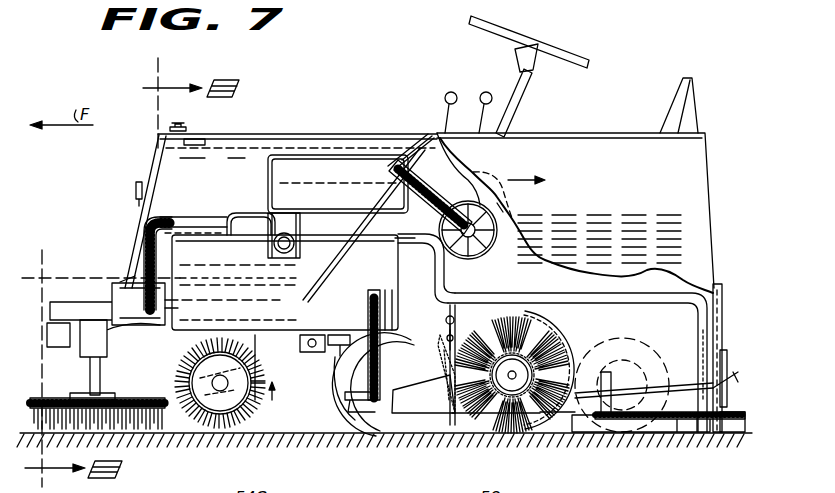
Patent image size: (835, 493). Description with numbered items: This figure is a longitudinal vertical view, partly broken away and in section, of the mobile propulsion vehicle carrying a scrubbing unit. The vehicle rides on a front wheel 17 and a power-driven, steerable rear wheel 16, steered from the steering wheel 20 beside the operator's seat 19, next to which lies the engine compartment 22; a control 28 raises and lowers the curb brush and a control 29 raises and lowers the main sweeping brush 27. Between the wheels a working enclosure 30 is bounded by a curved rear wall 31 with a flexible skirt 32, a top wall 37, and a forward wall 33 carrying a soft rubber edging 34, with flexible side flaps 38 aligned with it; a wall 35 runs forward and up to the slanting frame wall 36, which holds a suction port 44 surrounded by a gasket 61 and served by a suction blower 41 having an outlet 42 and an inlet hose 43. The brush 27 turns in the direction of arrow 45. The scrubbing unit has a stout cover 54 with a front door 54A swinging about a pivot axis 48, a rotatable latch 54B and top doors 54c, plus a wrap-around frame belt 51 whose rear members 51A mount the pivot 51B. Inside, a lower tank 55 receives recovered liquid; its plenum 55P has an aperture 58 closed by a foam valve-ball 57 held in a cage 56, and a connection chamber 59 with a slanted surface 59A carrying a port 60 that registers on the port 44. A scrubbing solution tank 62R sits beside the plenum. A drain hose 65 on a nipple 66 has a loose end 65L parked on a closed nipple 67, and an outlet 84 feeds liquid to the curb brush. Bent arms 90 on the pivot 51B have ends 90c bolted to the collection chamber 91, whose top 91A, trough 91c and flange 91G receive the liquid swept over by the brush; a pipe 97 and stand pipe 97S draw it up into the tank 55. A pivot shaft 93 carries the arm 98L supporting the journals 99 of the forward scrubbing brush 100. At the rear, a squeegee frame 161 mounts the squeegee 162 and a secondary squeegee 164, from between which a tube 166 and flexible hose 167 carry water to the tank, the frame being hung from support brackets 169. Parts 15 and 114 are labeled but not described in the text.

The rear wall 15 is at (720, 284).
The rear wheel 16 is at (640, 345).
The front wheel 17 is at (350, 432).
The operator's seat 19 is at (700, 76).
The steering wheel 20 is at (540, 40).
The engine compartment 22 is at (636, 192).
The main sweeping brush 27 is at (510, 435).
The curb brush control 28 is at (452, 92).
The main brush control lever 29 is at (489, 92).
The working enclosure 30 is at (528, 296).
The curved rear wall 31 is at (570, 345).
The flexible skirt 32 is at (560, 440).
The forward wall 33 is at (452, 305).
The soft rubber edging 34 is at (510, 312).
The wall 35 is at (428, 285).
The upper forward slanting wall 36 is at (463, 196).
The top wall 37 is at (506, 301).
The flexible side flaps 38 is at (450, 340).
The suction blower 41 is at (471, 190).
The blower outlet 42 is at (496, 172).
The suction inlet hose 43 is at (415, 200).
The suction port 44 is at (405, 155).
The brush rotation arrow 45 is at (570, 360).
The door pivot axis 48 is at (122, 278).
The wrap-around frame belt 51 is at (113, 285).
The downwardly extending frame members 51A is at (340, 370).
The pivot 51B is at (340, 360).
The cover 54 is at (278, 134).
The front opening door 54A is at (142, 212).
The rotatable latch 54B is at (135, 186).
The top opening doors 54c is at (206, 133).
The lower tank 55 is at (240, 308).
The plenum 55P is at (250, 215).
The cage 56 is at (276, 252).
The valve-ball 57 is at (292, 268).
The aperture 58 is at (290, 205).
The connection chamber 59 is at (300, 192).
The slanted rear surface 59A is at (386, 188).
The port 60 is at (395, 178).
The gasket 61 is at (425, 150).
The scrubbing solution tank 62R is at (212, 160).
The drain hose 65 is at (118, 298).
The drain hose loose end 65L is at (168, 215).
The nipple 66 is at (178, 306).
The closed end nipple 67 is at (208, 222).
The outlet 84 is at (125, 350).
The bent arms 90 is at (330, 425).
The arm ends 90c is at (445, 335).
The swept material collection chamber 91 is at (440, 420).
The chamber top 91A is at (452, 418).
The trough 91c is at (365, 425).
The flange 91G is at (490, 430).
The pivot shaft 93 is at (298, 330).
The pipe 97 is at (423, 394).
The stand pipe portion 97S is at (342, 268).
The forwardly extending arm 98L is at (240, 320).
The journals 99 is at (215, 425).
The forward cylindrical scrubbing brush 100 is at (252, 430).
The flow arrow 114 is at (277, 398).
The squeegee frame 161 is at (618, 420).
The squeegee 162 is at (735, 435).
The secondary squeegee rubber 164 is at (682, 428).
The tube 166 is at (730, 386).
The flexible hose 167 is at (702, 361).
The support brackets 169 is at (610, 377).